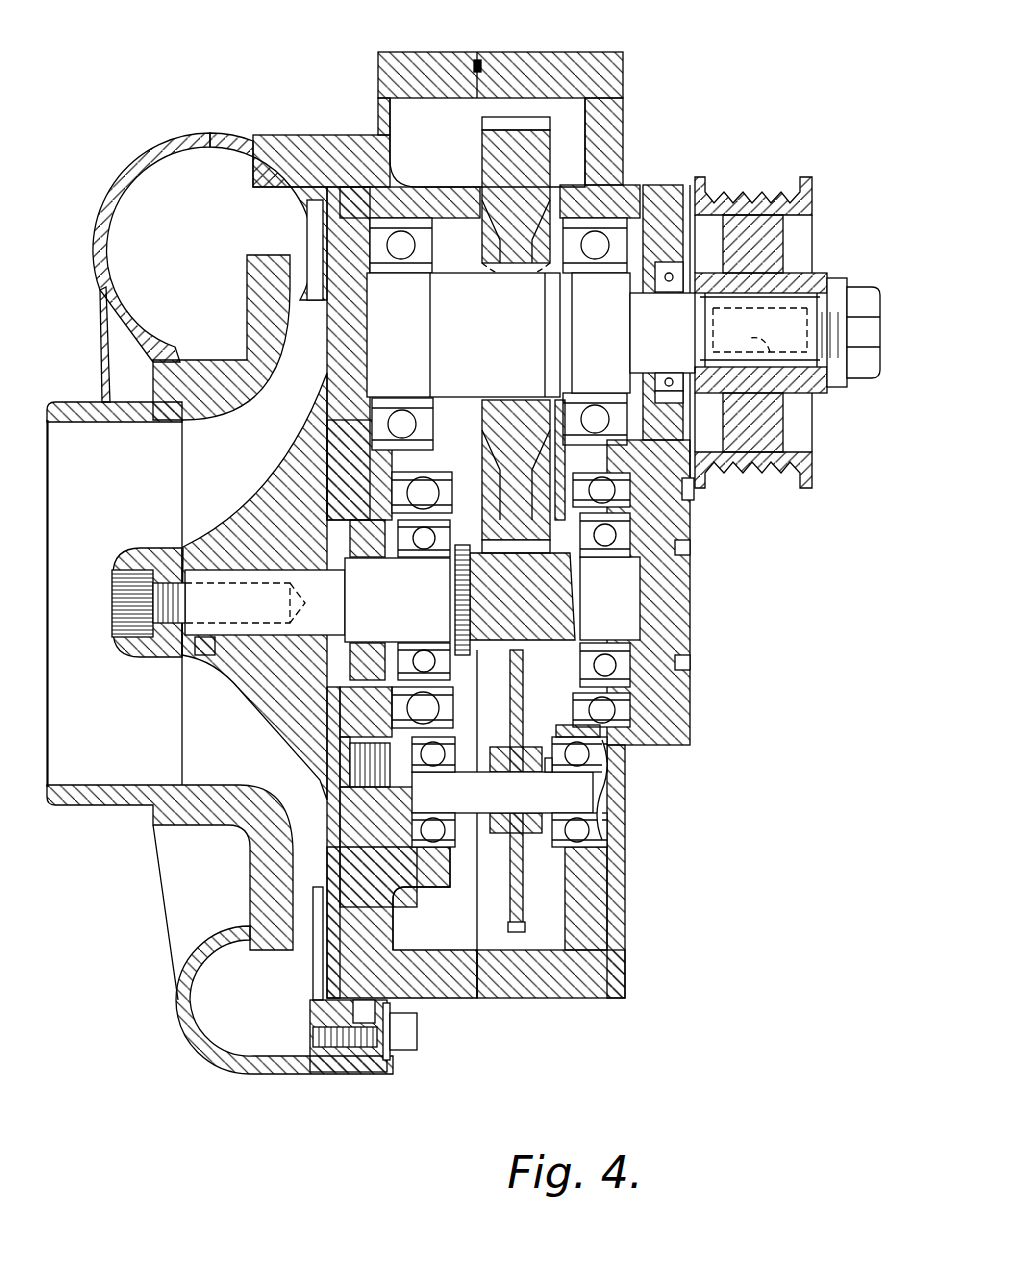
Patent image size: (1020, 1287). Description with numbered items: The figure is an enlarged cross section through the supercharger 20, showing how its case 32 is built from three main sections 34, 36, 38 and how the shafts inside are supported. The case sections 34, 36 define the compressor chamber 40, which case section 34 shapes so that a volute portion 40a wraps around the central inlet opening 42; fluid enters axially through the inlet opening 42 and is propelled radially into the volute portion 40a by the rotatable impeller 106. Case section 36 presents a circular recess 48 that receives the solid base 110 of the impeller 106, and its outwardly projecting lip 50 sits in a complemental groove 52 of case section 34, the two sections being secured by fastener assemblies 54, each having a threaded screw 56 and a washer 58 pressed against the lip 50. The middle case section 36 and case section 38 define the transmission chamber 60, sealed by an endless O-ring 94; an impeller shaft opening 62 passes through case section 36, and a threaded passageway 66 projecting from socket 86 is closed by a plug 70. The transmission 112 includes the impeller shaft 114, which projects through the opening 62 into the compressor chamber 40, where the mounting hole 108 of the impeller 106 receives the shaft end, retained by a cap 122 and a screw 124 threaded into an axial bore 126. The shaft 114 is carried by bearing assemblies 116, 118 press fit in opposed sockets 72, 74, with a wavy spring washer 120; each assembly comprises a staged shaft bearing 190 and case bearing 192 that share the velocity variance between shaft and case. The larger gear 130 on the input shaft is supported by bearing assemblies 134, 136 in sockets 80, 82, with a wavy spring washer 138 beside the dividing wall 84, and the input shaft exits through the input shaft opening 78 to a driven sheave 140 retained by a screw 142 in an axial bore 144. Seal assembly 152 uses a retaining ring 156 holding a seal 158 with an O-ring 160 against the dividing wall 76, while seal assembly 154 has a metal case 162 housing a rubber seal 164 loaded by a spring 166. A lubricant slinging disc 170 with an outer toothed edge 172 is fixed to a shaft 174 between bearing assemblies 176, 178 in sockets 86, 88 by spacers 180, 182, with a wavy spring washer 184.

The supercharger 20 is at (615, 50).
The case 32 is at (400, 52).
The case section 34 is at (185, 132).
The case section 36 is at (465, 990).
The case section 38 is at (612, 985).
The compressor chamber 40 is at (165, 762).
The volute portion 40a is at (225, 1020).
The inlet opening 42 is at (52, 738).
The circular recess 48 is at (343, 903).
The lip 50 is at (375, 1008).
The groove 52 is at (352, 1020).
The fastener assembly 54 is at (392, 1055).
The threaded screw 56 is at (327, 1042).
The washer 58 is at (388, 1062).
The transmission chamber 60 is at (410, 128).
The impeller shaft opening 62 is at (333, 527).
The passageway 66 is at (328, 800).
The threaded plug 70 is at (345, 768).
The bearing assembly socket 72 is at (458, 472).
The bearing assembly socket 74 is at (556, 462).
The dividing wall 76 is at (355, 705).
The input shaft opening 78 is at (697, 402).
The bearing assembly socket 80 is at (432, 232).
The bearing assembly socket 82 is at (552, 278).
The dividing wall 84 is at (636, 275).
The bearing assembly socket 86 is at (450, 848).
The bearing assembly socket 88 is at (555, 848).
The O-ring 94 is at (476, 62).
The impeller 106 is at (182, 730).
The central mounting hole 108 is at (243, 568).
The base 110 is at (316, 890).
The transmission 112 is at (508, 114).
The impeller shaft 114 is at (198, 572).
The bearing assembly 116 is at (383, 468).
The bearing assembly 118 is at (660, 752).
The wavy spring washer 120 is at (680, 700).
The cap 122 is at (128, 640).
The screw 124 is at (125, 590).
The axial bore 126 is at (205, 640).
The gear 130 is at (490, 148).
The bearing assembly 134 is at (333, 230).
The bearing assembly 136 is at (683, 518).
The wavy spring washer 138 is at (658, 212).
The driven sheave 140 is at (790, 178).
The screw 142 is at (855, 290).
The axial bore 144 is at (790, 360).
The impeller shaft seal assembly 152 is at (333, 697).
The input shaft seal assembly 154 is at (692, 492).
The retaining ring 156 is at (350, 548).
The seal 158 is at (372, 652).
The O-ring 160 is at (355, 508).
The metal case 162 is at (672, 260).
The rubber seal 164 is at (660, 372).
The spring 166 is at (653, 390).
The lubricant slinging disc 170 is at (510, 900).
The outer toothed edge 172 is at (522, 932).
The shaft 174 is at (445, 790).
The bearing assembly 176 is at (350, 748).
The bearing assembly 178 is at (560, 724).
The spacer 180 is at (467, 757).
The spacer 182 is at (549, 770).
The wavy spring washer 184 is at (607, 813).
The shaft bearing 190 is at (690, 548).
The case bearing 192 is at (487, 672).